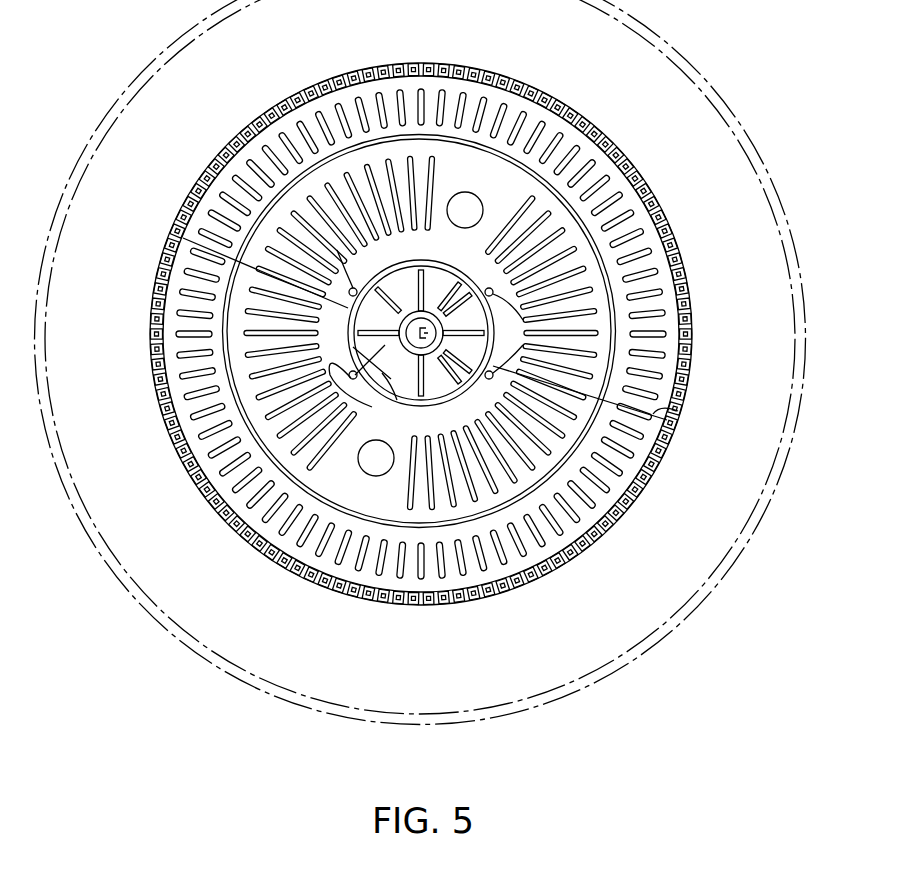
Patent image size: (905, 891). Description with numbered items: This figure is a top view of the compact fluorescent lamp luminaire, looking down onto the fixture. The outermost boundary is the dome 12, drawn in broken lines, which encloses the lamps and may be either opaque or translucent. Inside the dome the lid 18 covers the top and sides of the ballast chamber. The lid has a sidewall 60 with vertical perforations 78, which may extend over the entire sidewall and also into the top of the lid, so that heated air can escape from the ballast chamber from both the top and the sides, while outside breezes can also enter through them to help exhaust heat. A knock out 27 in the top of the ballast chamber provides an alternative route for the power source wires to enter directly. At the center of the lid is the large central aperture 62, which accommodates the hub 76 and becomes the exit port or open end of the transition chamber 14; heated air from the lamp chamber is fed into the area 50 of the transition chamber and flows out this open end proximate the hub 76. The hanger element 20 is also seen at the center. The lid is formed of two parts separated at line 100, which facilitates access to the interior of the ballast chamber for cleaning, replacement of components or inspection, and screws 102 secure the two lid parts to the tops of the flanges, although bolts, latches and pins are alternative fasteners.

The dome 12 is at (690, 57).
The transition chamber 14 is at (377, 270).
The lid 18 is at (509, 165).
The hanger element 20 is at (418, 261).
The knock out 27 is at (470, 192).
The area of the transition chamber 50 is at (458, 329).
The sidewall 60 is at (450, 62).
The central aperture 62 is at (376, 446).
The hub 76 is at (395, 402).
The perforations 78 is at (397, 62).
The line 100 is at (678, 411).
The screws 102 is at (523, 345).